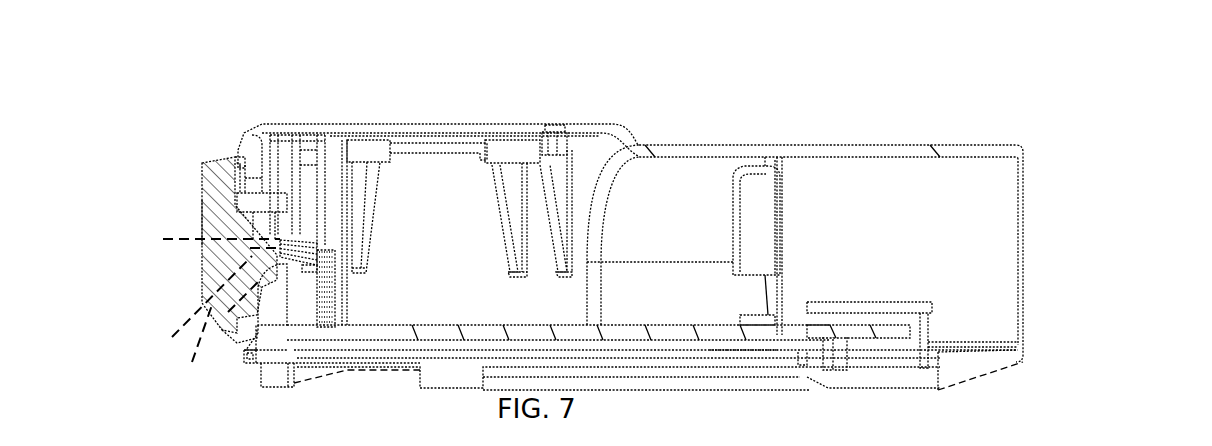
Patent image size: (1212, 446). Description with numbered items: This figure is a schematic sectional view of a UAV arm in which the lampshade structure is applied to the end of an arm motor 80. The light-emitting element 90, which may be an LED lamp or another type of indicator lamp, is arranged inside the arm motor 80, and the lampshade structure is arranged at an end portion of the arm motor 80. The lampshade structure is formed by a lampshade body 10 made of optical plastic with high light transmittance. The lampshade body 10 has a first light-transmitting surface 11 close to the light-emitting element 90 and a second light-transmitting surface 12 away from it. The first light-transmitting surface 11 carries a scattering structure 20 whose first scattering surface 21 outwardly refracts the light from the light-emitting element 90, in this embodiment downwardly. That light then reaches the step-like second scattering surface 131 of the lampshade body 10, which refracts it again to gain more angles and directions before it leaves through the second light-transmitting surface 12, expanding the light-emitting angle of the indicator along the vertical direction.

The lampshade body 10 is at (201, 192).
The first light-transmitting surface 11 is at (263, 303).
The second light-transmitting surface 12 is at (201, 222).
The scattering structure 20 is at (268, 280).
The first scattering surface 21 is at (270, 180).
The arm motor 80 is at (707, 145).
The light-emitting element 90 is at (325, 243).
The second scattering surface 131 is at (214, 155).